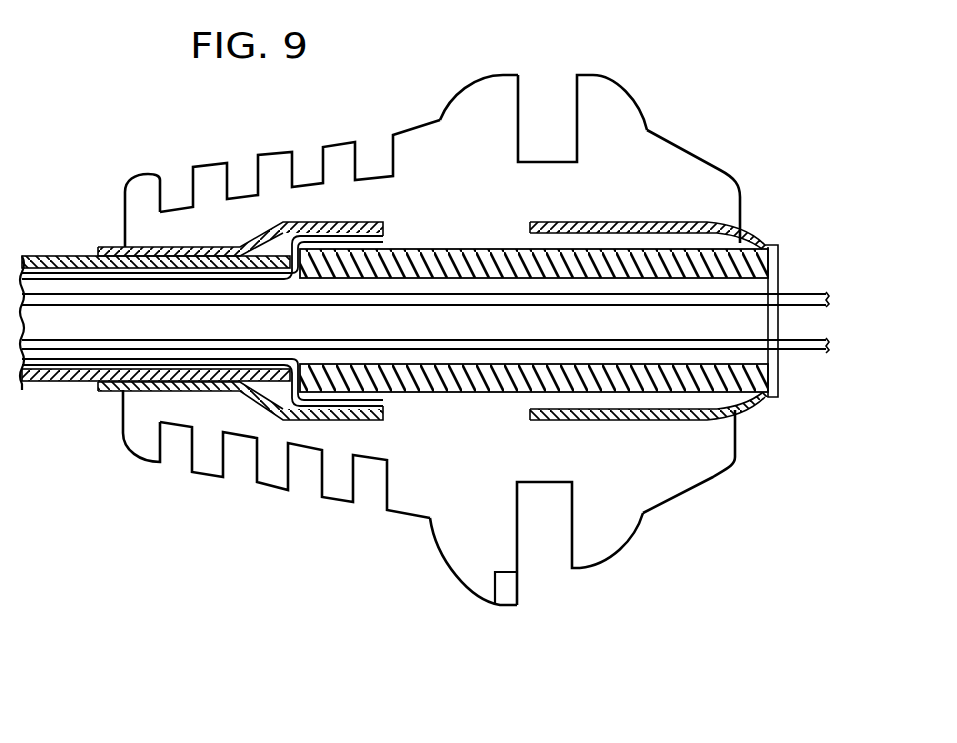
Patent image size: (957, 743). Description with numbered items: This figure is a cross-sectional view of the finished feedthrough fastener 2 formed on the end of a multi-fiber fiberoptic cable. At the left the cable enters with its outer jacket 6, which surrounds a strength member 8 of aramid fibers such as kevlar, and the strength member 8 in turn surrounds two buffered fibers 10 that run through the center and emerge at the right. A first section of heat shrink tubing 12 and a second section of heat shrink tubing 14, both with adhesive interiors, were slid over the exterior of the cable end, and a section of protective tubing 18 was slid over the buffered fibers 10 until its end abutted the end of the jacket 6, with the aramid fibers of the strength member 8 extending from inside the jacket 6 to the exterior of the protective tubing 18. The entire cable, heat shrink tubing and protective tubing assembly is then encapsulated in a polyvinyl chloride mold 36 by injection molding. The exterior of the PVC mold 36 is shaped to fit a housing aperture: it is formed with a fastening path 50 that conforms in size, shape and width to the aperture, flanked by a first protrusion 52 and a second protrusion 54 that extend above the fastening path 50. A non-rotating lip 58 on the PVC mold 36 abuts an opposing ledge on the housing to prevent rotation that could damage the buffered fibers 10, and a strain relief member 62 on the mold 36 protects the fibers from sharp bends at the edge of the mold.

The feedthrough fastener 2 is at (324, 112).
The outer jacket 6 is at (58, 258).
The strength member 8 is at (478, 232).
The buffered fibers 10 is at (803, 341).
The first section of heat shrink tubing 12 is at (108, 250).
The second section of heat shrink tubing 14 is at (744, 243).
The protective tubing 18 is at (762, 387).
The PVC mold 36 is at (650, 176).
The fastening path 50 is at (540, 160).
The first protrusion 52 is at (483, 95).
The second protrusion 54 is at (608, 103).
The non-rotating lip 58 is at (510, 588).
The strain relief member 62 is at (143, 200).